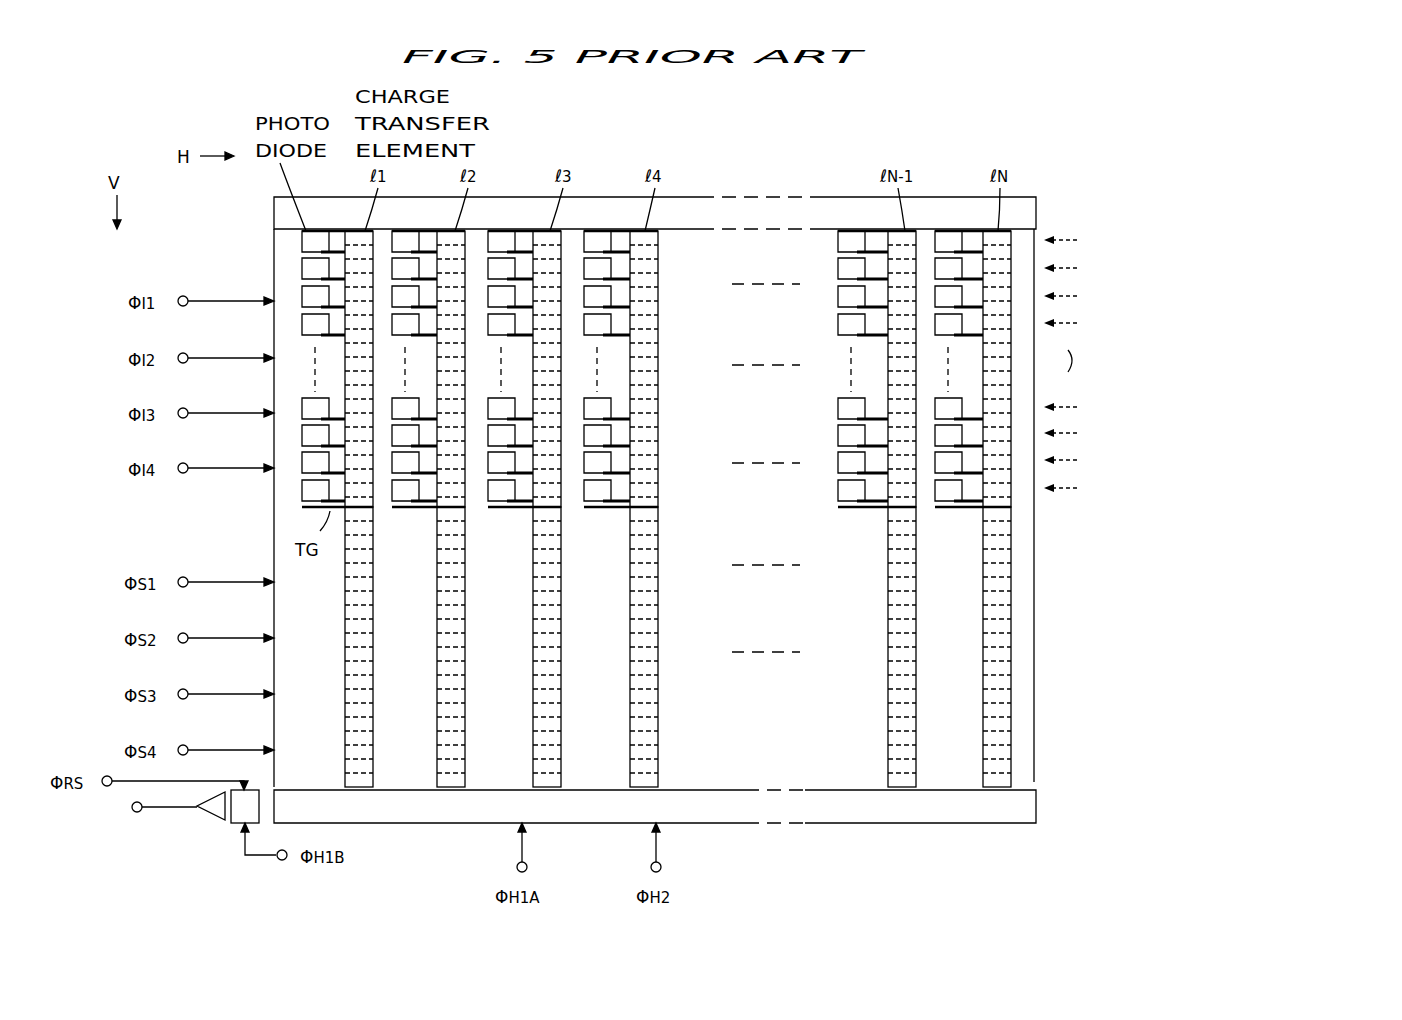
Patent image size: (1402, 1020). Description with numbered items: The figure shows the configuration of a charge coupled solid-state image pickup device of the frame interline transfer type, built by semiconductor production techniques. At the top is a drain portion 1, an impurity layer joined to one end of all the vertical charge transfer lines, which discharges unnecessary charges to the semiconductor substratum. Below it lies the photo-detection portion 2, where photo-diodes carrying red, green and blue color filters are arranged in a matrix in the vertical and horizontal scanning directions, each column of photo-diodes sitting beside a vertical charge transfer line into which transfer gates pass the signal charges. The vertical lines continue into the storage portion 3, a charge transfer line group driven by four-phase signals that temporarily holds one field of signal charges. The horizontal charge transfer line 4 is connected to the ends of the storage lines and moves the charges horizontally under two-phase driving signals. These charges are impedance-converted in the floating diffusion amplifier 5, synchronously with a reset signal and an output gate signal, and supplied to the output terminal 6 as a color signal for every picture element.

The drain portion 1 is at (1040, 206).
The photo-detection portion 2 is at (1100, 234).
The storage portion 3 is at (1100, 767).
The horizontal charge transfer line 4 is at (1038, 797).
The floating diffusion amplifier 5 is at (207, 812).
The output terminal 6 is at (131, 814).